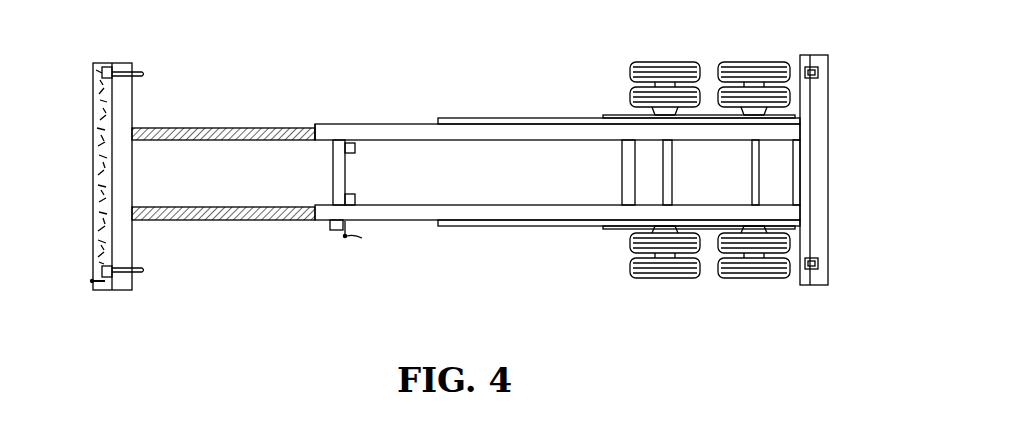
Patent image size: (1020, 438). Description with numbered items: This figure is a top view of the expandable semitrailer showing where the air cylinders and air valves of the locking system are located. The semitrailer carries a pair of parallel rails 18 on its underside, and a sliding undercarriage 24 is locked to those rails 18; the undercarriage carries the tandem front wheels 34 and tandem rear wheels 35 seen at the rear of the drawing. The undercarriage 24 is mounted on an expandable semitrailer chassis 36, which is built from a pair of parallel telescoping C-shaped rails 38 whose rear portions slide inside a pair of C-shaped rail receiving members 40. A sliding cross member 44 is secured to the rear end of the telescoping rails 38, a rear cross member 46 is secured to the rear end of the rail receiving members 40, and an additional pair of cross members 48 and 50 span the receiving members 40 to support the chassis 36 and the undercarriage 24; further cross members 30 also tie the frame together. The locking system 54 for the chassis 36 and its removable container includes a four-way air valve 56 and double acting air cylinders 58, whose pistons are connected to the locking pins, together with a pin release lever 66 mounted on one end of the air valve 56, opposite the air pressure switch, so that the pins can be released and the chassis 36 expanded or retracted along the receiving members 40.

The parallel rails 18 is at (578, 118).
The sliding undercarriage 24 is at (620, 114).
The cross members 30 is at (756, 186).
The tandem front wheels 34 is at (668, 280).
The tandem rear wheels 35 is at (752, 280).
The expandable semitrailer chassis 36 is at (284, 124).
The telescoping rails 38 is at (233, 128).
The rail receiving members 40 is at (400, 130).
The sliding cross member 44 is at (340, 190).
The rear cross member 46 is at (818, 175).
The cross member 48 is at (628, 180).
The cross member 50 is at (797, 182).
The locking system 54 is at (110, 66).
The 4-way air valve 56 is at (100, 268).
The double acting air cylinders 58 is at (140, 72).
The pin release lever 66 is at (92, 282).